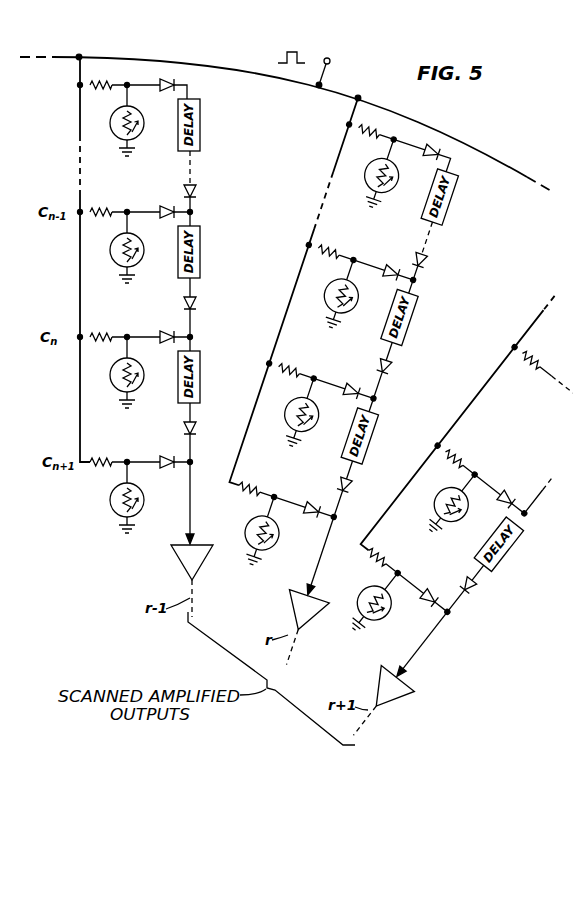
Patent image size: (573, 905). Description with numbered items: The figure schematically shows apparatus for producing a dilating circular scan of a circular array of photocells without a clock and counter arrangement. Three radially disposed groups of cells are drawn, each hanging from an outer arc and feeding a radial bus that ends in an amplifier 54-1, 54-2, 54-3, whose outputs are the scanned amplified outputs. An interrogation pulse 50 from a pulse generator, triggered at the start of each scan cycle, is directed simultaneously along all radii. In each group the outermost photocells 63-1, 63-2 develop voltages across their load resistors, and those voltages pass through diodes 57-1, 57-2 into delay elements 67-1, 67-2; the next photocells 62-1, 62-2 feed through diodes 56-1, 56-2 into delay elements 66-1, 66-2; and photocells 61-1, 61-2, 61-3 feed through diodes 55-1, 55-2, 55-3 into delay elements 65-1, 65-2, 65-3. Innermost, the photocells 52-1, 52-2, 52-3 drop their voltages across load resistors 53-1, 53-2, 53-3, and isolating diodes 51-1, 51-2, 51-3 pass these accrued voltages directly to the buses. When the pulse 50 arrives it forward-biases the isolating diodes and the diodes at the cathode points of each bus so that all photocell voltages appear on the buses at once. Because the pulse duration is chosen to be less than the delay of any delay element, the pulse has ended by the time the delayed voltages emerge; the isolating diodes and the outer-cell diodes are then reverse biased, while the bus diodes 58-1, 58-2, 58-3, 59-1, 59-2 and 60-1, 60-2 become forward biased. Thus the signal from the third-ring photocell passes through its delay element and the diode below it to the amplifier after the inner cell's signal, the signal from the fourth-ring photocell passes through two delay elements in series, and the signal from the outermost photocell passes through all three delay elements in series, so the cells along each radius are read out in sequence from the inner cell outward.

The pulse 50 is at (300, 60).
The isolating diode 51-1 is at (168, 457).
The isolating diode 51-2 is at (318, 500).
The isolating diode 51-3 is at (430, 600).
The photocell 52-1 is at (113, 504).
The photocell 52-2 is at (272, 545).
The photocell 52-3 is at (365, 595).
The load resistor 53-1 is at (98, 469).
The load resistor 53-2 is at (248, 492).
The load resistor 53-3 is at (378, 562).
The amplifier 54-1 is at (203, 557).
The amplifier 54-2 is at (304, 612).
The amplifier 54-3 is at (385, 690).
The diode 55-1 is at (168, 332).
The diode 55-2 is at (358, 384).
The diode 55-3 is at (505, 496).
The diode 56-1 is at (167, 205).
The diode 56-2 is at (397, 265).
The diode 57-1 is at (163, 78).
The diode 57-2 is at (440, 146).
The diode 58-1 is at (196, 430).
The diode 58-2 is at (350, 490).
The diode 58-3 is at (466, 598).
The diode 59-1 is at (198, 303).
The diode 59-2 is at (395, 371).
The diode 60-1 is at (198, 192).
The diode 60-2 is at (428, 262).
The photocell 61-1 is at (112, 378).
The photocell 61-2 is at (292, 407).
The photocell 61-3 is at (455, 521).
The photocell 62-1 is at (108, 250).
The photocell 62-2 is at (325, 292).
The photocell 63-1 is at (108, 122).
The photocell 63-2 is at (364, 170).
The delay element 65-1 is at (202, 376).
The delay element 65-2 is at (371, 437).
The delay element 65-3 is at (512, 550).
The delay element 66-1 is at (199, 250).
The delay element 66-2 is at (415, 315).
The delay element 67-1 is at (199, 122).
The delay element 67-2 is at (453, 198).